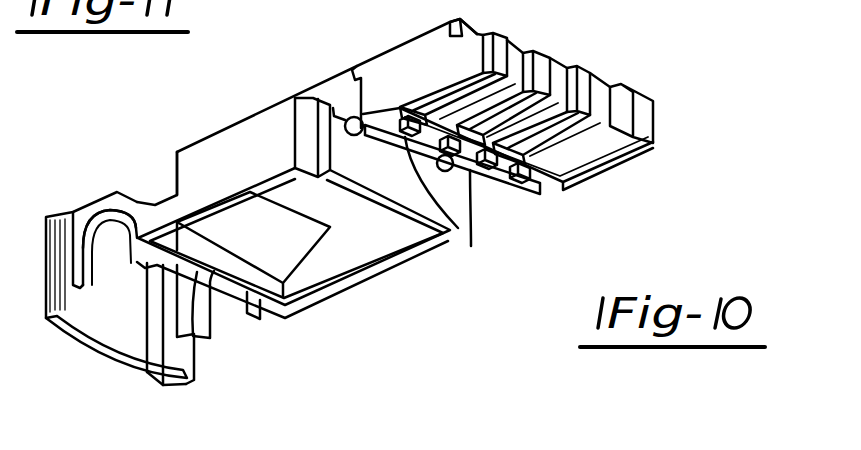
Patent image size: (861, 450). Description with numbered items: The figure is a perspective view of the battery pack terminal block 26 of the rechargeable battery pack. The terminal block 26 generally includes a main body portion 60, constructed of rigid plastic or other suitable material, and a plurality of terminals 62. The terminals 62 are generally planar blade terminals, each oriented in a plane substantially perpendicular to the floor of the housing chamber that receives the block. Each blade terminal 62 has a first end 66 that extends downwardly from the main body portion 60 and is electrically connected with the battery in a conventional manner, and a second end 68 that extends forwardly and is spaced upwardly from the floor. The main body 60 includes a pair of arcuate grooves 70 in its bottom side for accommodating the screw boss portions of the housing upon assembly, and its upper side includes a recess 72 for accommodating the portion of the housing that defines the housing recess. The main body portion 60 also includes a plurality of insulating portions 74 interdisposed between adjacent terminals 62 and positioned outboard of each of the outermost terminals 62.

The battery pack terminal block 26 is at (87, 197).
The main body portion 60 is at (262, 113).
The terminals 62 is at (515, 52).
The first end 66 is at (490, 170).
The second end 68 is at (637, 96).
The arcuate grooves 70 is at (83, 330).
The recess 72 is at (188, 167).
The insulating portions 74 is at (462, 32).